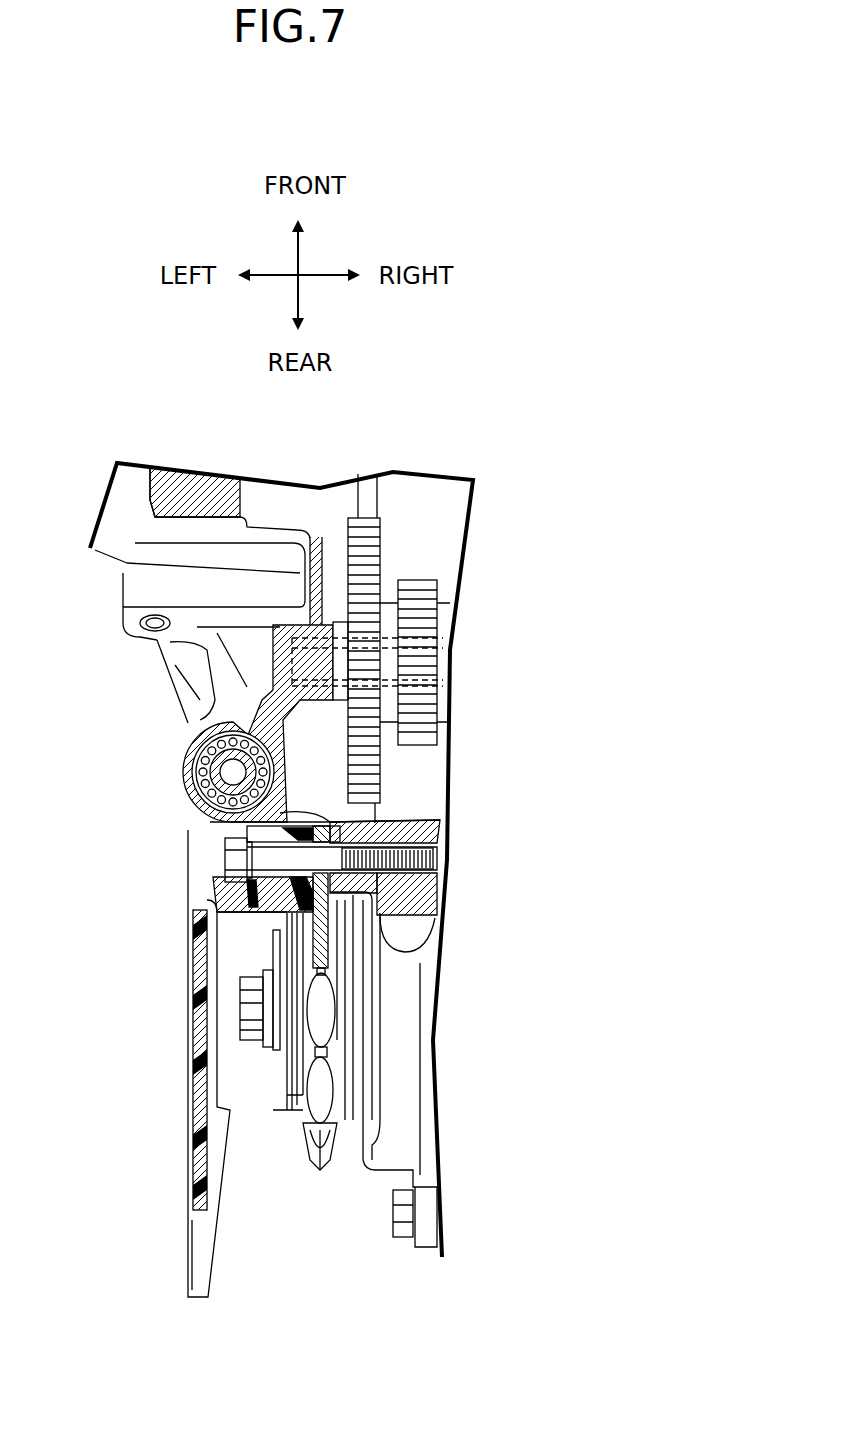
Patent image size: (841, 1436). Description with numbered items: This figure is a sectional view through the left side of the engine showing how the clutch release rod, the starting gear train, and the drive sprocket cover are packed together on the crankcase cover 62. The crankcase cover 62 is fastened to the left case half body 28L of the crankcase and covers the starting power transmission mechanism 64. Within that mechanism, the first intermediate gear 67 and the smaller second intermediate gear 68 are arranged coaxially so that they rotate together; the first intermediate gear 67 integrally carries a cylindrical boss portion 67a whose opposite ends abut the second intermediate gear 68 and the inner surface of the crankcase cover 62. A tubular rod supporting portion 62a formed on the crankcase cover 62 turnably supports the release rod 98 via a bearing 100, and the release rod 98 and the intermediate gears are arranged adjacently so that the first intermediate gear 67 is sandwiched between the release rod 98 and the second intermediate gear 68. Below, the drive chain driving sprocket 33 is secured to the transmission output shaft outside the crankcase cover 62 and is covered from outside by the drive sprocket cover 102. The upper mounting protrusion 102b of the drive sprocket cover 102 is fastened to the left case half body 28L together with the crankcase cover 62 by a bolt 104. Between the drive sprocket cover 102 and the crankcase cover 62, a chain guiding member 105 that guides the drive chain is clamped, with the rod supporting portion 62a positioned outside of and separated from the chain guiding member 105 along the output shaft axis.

The left case half body 28L is at (408, 832).
The drive chain driving sprocket 33 is at (320, 1143).
The crankcase cover 62 is at (133, 573).
The rod supporting portion 62a is at (195, 797).
The starting power transmission mechanism 64 is at (398, 560).
The first intermediate gear 67 is at (362, 495).
The boss portion 67a is at (342, 597).
The second intermediate gear 68 is at (420, 580).
The release rod 98 is at (195, 750).
The bearing 100 is at (203, 783).
The drive sprocket cover 102 is at (208, 1137).
The upper mounting protrusion 102b is at (290, 837).
The bolt 104 is at (227, 858).
The chain guiding member 105 is at (327, 950).